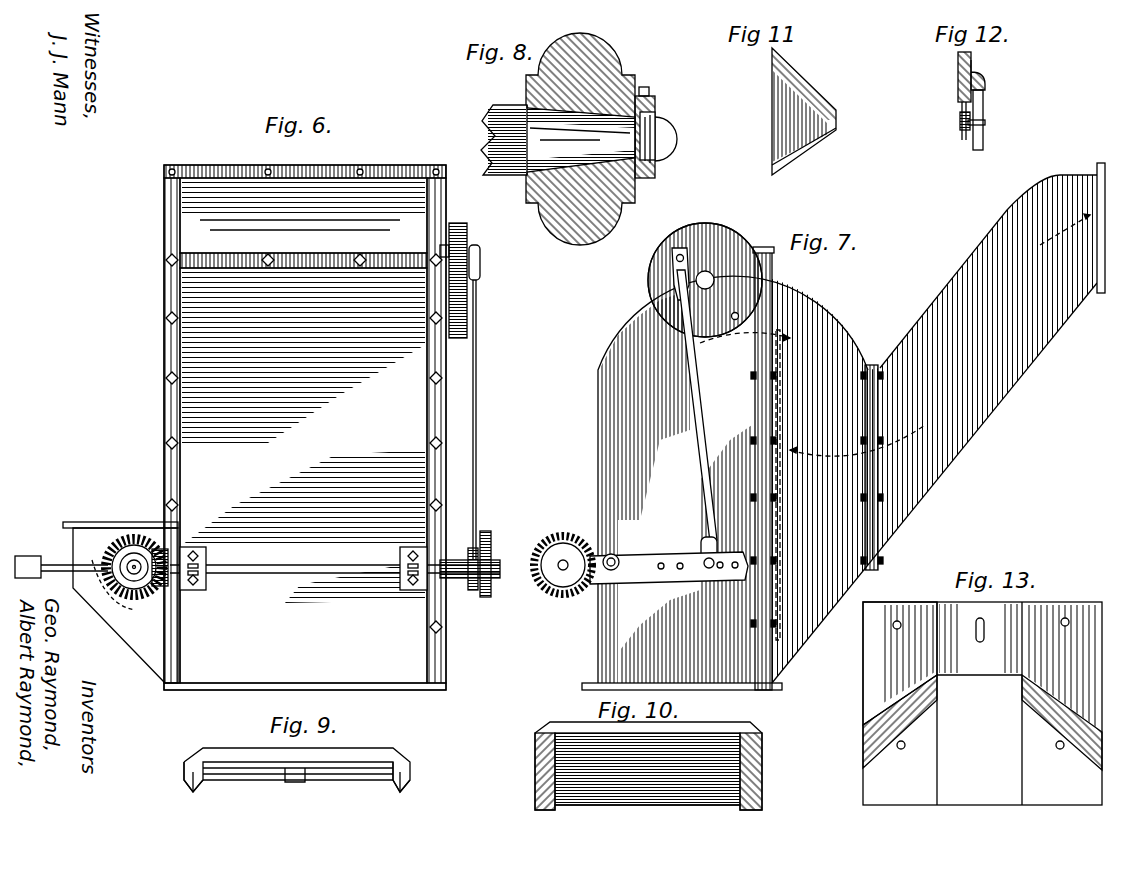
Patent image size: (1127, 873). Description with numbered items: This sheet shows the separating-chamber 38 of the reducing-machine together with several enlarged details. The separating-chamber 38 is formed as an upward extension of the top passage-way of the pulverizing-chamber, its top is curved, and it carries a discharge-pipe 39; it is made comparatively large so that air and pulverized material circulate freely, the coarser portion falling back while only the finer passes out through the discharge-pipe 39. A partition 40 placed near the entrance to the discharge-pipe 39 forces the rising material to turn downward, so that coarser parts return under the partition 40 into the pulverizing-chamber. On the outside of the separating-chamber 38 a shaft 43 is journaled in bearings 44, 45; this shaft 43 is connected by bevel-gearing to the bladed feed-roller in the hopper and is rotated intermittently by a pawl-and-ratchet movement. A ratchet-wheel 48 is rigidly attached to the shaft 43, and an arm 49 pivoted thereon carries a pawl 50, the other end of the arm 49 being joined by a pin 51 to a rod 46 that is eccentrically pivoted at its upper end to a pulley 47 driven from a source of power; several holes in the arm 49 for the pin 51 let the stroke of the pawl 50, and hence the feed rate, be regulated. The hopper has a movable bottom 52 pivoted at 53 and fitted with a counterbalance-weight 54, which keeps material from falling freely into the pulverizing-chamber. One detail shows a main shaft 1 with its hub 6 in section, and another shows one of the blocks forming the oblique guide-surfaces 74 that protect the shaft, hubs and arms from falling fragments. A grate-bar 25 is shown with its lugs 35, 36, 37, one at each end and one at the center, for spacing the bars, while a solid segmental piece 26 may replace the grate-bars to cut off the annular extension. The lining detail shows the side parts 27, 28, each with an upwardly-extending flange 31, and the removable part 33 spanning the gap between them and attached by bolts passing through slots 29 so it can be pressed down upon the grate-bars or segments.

In FIG. 8, the main shaft 1 is at (502, 125).
In FIG. 8, the hub 6 is at (580, 139).
In FIG. 9, the grate-bars 25 is at (348, 772).
In FIG. 10, the solid segmental pieces 26 is at (612, 798).
In FIG. 13, the lining part 27 is at (900, 731).
In FIG. 13, the lining part 28 is at (1062, 731).
In FIG. 13, the slots 29 is at (984, 624).
In FIG. 13, the upwardly-extending flange 31 is at (900, 663).
In FIG. 13, the lining part 33 is at (979, 639).
In FIG. 9, the lug 35 is at (190, 788).
In FIG. 9, the lug 36 is at (296, 783).
In FIG. 9, the lug 37 is at (399, 788).
In FIG. 6, the separating-chamber 38 is at (303, 430).
In FIG. 7, the separating-chamber 38 is at (847, 429).
In FIG. 7, the discharge-pipe 39 is at (938, 423).
In FIG. 7, the partition 40 is at (778, 390).
In FIG. 6, the shaft 43 is at (300, 550).
In FIG. 6, the bearing 44 is at (193, 590).
In FIG. 6, the bearing 45 is at (406, 584).
In FIG. 6, the rod 46 is at (478, 392).
In FIG. 7, the rod 46 is at (692, 390).
In FIG. 6, the pulley 47 is at (467, 233).
In FIG. 7, the pulley 47 is at (710, 258).
In FIG. 6, the ratchet-wheel 48 is at (485, 546).
In FIG. 7, the ratchet-wheel 48 is at (555, 540).
In FIG. 6, the arm 49 is at (472, 582).
In FIG. 7, the arm 49 is at (669, 568).
In FIG. 7, the pawl 50 is at (608, 553).
In FIG. 7, the pin 51 is at (700, 548).
In FIG. 6, the movable bottom 52 is at (112, 598).
In FIG. 6, the pivot 53 is at (98, 566).
In FIG. 6, the counterbalance-weight 54 is at (61, 567).
In FIG. 11, the oblique guide-surfaces 74 is at (822, 91).